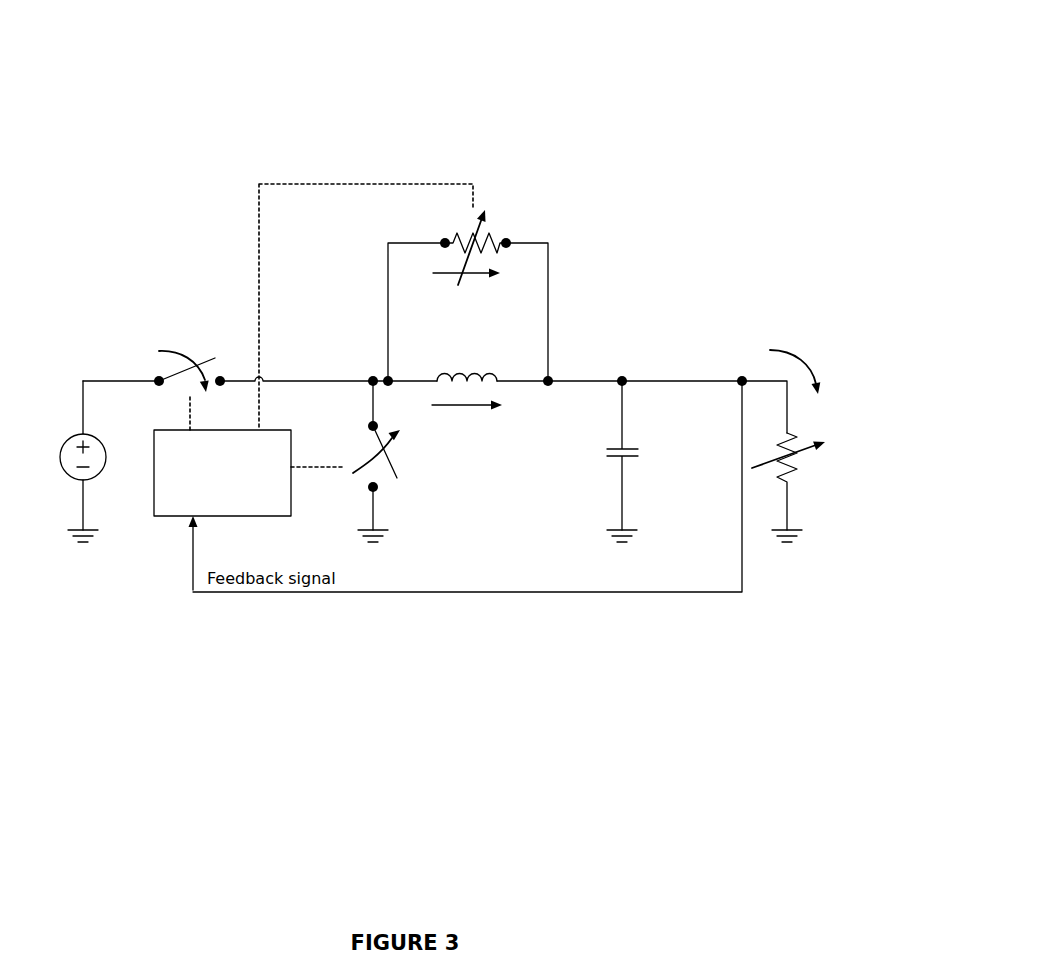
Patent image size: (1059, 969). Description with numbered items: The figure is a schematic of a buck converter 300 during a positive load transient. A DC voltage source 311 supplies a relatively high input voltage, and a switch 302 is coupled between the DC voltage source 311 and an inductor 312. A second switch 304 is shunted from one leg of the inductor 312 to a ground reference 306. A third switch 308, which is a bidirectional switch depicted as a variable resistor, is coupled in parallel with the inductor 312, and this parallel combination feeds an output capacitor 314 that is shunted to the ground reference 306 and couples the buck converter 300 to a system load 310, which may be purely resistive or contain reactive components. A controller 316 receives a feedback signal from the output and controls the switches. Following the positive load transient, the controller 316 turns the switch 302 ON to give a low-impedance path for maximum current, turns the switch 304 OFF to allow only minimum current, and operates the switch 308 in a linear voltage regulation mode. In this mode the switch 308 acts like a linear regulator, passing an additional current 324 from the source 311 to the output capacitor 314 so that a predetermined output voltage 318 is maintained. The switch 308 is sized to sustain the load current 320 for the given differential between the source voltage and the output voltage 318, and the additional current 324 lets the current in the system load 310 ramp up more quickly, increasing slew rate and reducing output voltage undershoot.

The buck converter 300 is at (609, 72).
The switch 302 is at (212, 356).
The switch 304 is at (397, 478).
The ground reference 306 is at (375, 543).
The switch 308 is at (490, 240).
The system load 310 is at (787, 483).
The DC voltage source 311 is at (100, 480).
The inductor 312 is at (448, 372).
The output capacitor 314 is at (612, 455).
The controller 316 is at (237, 516).
The output voltage 318 is at (692, 467).
The load current 320 is at (793, 350).
The additional current 324 is at (490, 285).